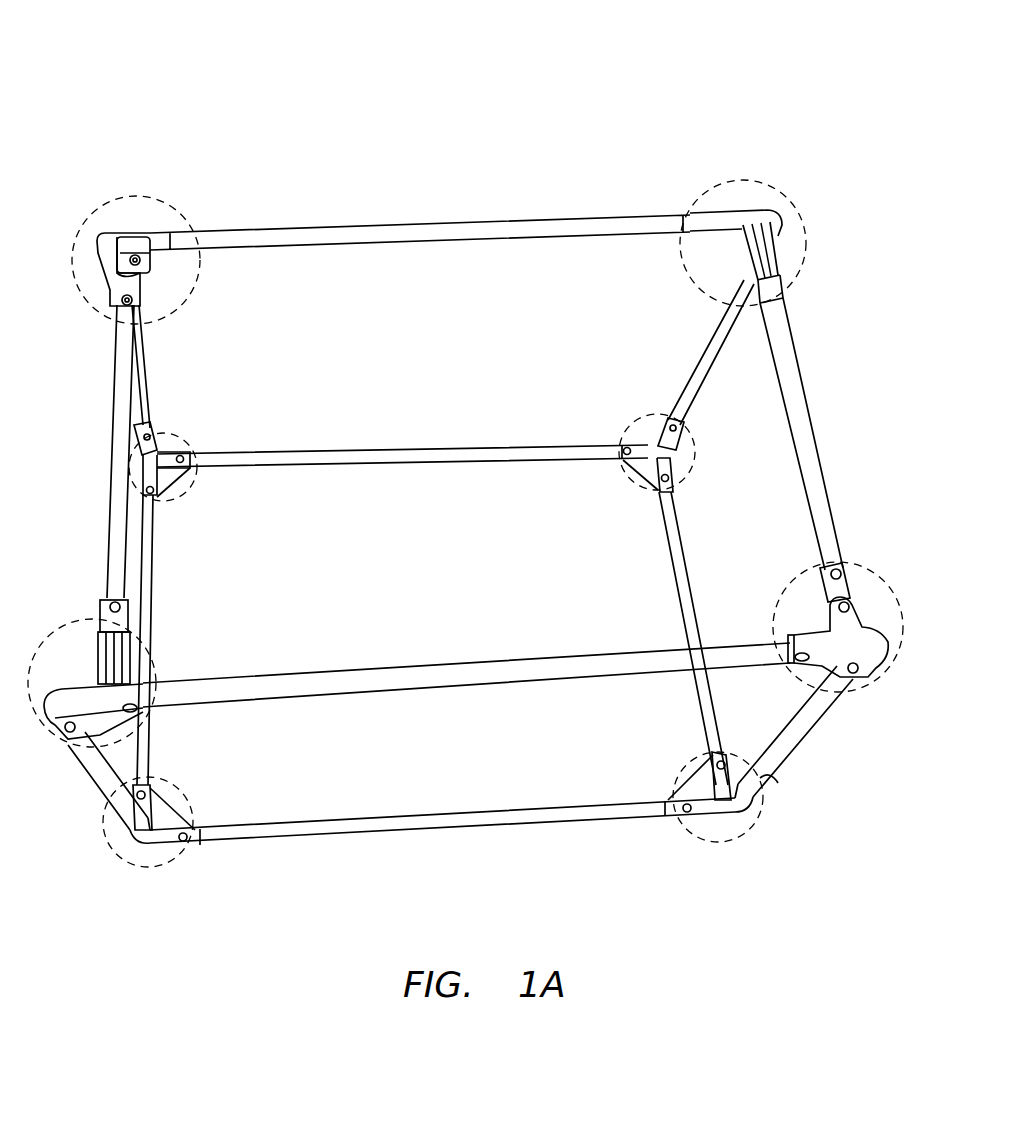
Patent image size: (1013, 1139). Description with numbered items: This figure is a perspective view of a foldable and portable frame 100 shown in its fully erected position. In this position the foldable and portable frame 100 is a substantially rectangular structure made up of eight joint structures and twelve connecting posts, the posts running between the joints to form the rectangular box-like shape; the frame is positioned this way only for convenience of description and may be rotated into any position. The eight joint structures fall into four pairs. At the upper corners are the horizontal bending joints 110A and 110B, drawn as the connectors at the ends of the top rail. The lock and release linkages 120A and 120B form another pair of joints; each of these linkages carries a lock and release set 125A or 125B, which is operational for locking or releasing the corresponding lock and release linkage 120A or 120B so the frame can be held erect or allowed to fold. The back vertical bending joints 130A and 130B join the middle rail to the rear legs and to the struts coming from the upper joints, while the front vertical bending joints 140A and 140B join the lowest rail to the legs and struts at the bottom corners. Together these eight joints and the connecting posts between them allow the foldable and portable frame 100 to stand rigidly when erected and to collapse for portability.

The foldable and portable frame 100 is at (163, 94).
The horizontal bending joint 110A is at (180, 212).
The horizontal bending joint 110B is at (850, 565).
The lock and release linkage 120A is at (82, 618).
The lock and release linkage 120B is at (777, 190).
The lock and release set 125A is at (120, 658).
The lock and release set 125B is at (775, 258).
The back vertical bending joint 130A is at (163, 435).
The back vertical bending joint 130B is at (633, 420).
The front vertical bending joint 140A is at (150, 867).
The front vertical bending joint 140B is at (718, 842).